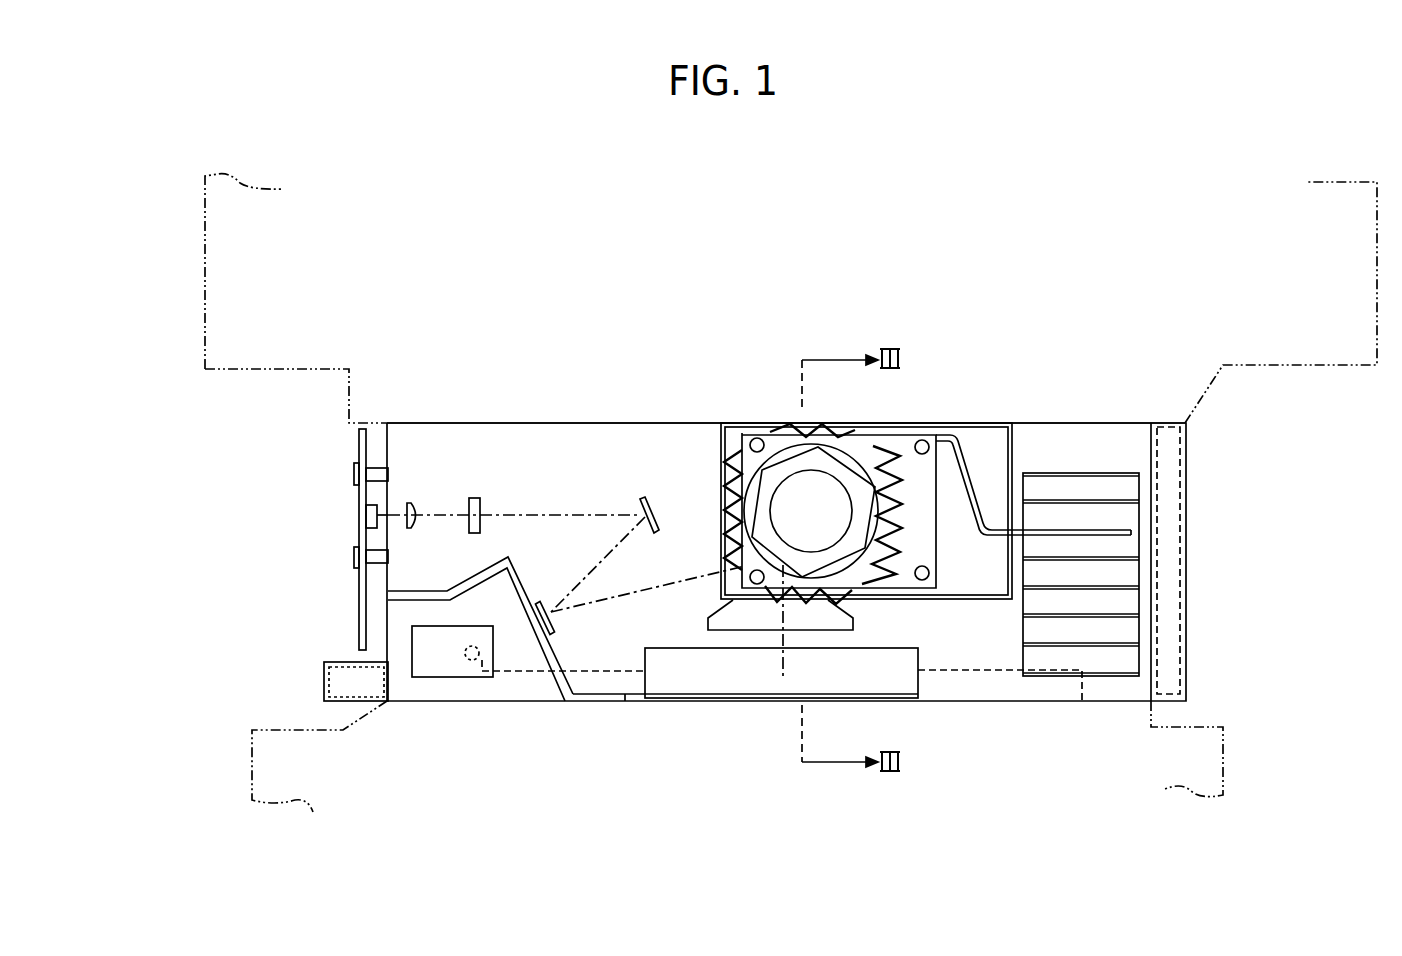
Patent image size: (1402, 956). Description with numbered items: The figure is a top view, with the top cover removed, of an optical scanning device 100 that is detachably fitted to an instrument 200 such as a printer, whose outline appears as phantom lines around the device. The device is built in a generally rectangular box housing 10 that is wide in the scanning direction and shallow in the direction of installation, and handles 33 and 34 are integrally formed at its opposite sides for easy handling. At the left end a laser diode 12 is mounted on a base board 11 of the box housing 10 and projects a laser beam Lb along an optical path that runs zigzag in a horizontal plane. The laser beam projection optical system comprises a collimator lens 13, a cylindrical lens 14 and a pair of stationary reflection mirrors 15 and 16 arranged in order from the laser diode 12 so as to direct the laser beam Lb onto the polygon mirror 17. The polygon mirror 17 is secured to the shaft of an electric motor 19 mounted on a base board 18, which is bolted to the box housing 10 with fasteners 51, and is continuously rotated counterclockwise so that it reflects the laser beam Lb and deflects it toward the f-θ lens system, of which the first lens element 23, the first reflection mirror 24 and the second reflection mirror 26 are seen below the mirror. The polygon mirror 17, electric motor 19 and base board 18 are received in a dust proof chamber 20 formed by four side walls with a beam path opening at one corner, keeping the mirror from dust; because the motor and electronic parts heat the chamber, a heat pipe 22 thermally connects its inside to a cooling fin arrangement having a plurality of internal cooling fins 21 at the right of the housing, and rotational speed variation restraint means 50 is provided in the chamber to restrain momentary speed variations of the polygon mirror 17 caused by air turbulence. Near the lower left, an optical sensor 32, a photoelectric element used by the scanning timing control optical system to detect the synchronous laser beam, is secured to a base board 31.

The instrument 200 is at (217, 372).
The optical scanning device 100 is at (655, 405).
The box housing 10 is at (466, 423).
The base board 11 is at (359, 440).
The laser diode 12 is at (372, 530).
The laser beam Lb is at (584, 510).
The collimator lens 13 is at (412, 500).
The cylindrical lens 14 is at (477, 496).
The reflection mirror 15 is at (647, 497).
The reflection mirror 16 is at (540, 601).
The dust proof chamber 20 is at (718, 448).
The base board 18 is at (927, 563).
The fixing screw 51 is at (766, 440).
The electric motor 19 is at (868, 528).
The polygon mirror 17 is at (870, 500).
The rotational speed variation restraint means 50 is at (884, 452).
The heat pipe 22 is at (962, 445).
The internal cooling fins 21 is at (1076, 528).
The first lens element 23 is at (708, 622).
The first reflection mirror 24 is at (675, 686).
The second reflection mirror 26 is at (1012, 690).
The base board 31 is at (440, 678).
The optical sensor 32 is at (482, 671).
The handle 33 is at (336, 662).
The handle 34 is at (1185, 663).